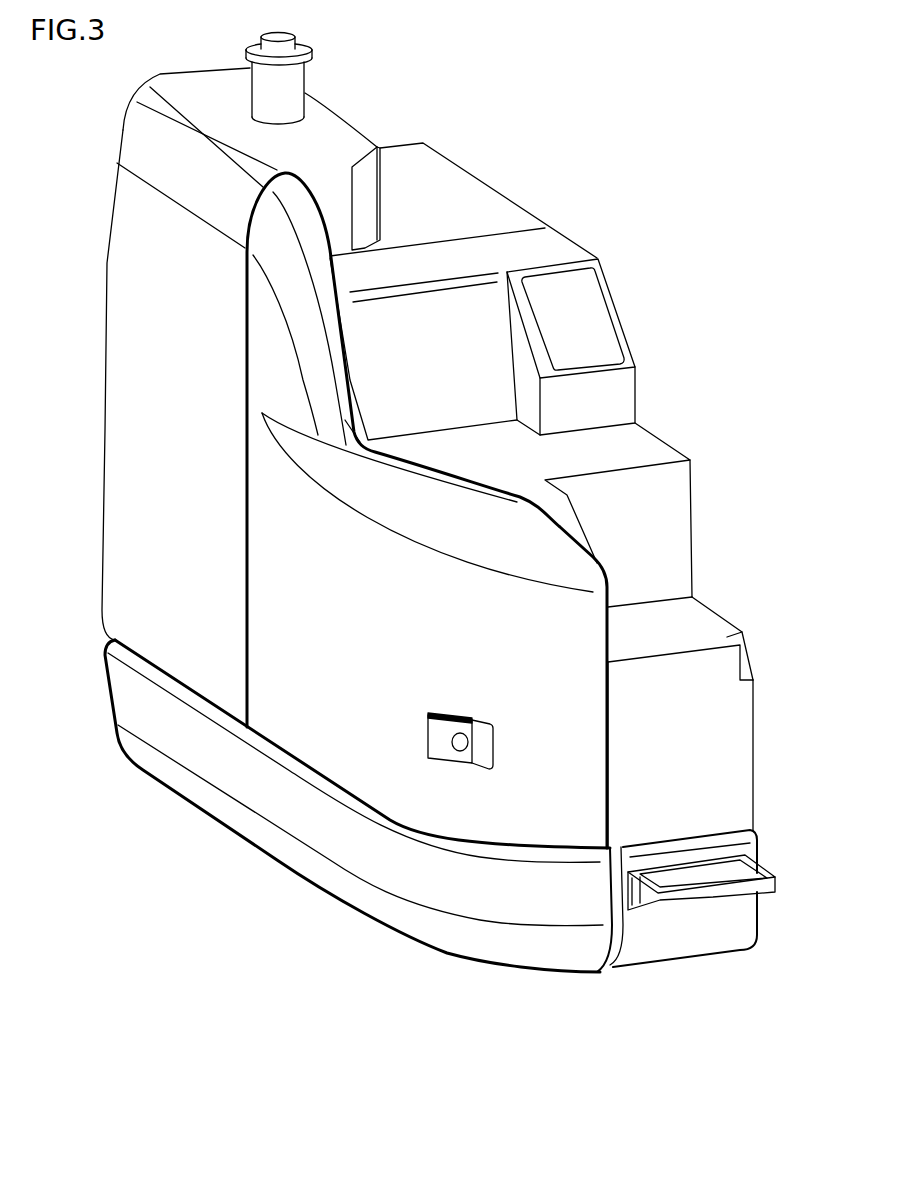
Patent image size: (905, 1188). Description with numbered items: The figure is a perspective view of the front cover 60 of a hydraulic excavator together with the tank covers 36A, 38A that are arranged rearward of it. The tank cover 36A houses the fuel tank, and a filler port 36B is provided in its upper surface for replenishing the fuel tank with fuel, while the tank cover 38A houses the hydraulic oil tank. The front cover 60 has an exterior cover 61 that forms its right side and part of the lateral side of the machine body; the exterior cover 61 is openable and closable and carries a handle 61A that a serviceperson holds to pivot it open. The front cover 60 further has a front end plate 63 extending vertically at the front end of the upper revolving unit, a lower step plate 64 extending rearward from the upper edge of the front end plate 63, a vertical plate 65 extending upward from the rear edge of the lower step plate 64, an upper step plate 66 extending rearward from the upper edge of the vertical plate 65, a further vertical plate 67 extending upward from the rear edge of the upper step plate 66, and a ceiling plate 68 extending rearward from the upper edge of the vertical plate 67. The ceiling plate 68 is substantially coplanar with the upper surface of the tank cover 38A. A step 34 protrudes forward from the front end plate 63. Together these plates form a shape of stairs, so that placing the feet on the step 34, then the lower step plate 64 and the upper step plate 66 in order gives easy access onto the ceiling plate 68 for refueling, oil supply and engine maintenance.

The step 34 is at (710, 893).
The tank cover 36A is at (150, 275).
The filler port 36B is at (287, 85).
The tank cover 38A is at (467, 193).
The front cover 60 is at (688, 335).
The exterior cover 61 is at (368, 725).
The handle 61A is at (443, 740).
The front end plate 63 is at (727, 738).
The lower step plate 64 is at (690, 623).
The vertical plate 65 is at (643, 518).
The upper step plate 66 is at (635, 447).
The vertical plate 67 is at (463, 328).
The ceiling plate 68 is at (538, 253).